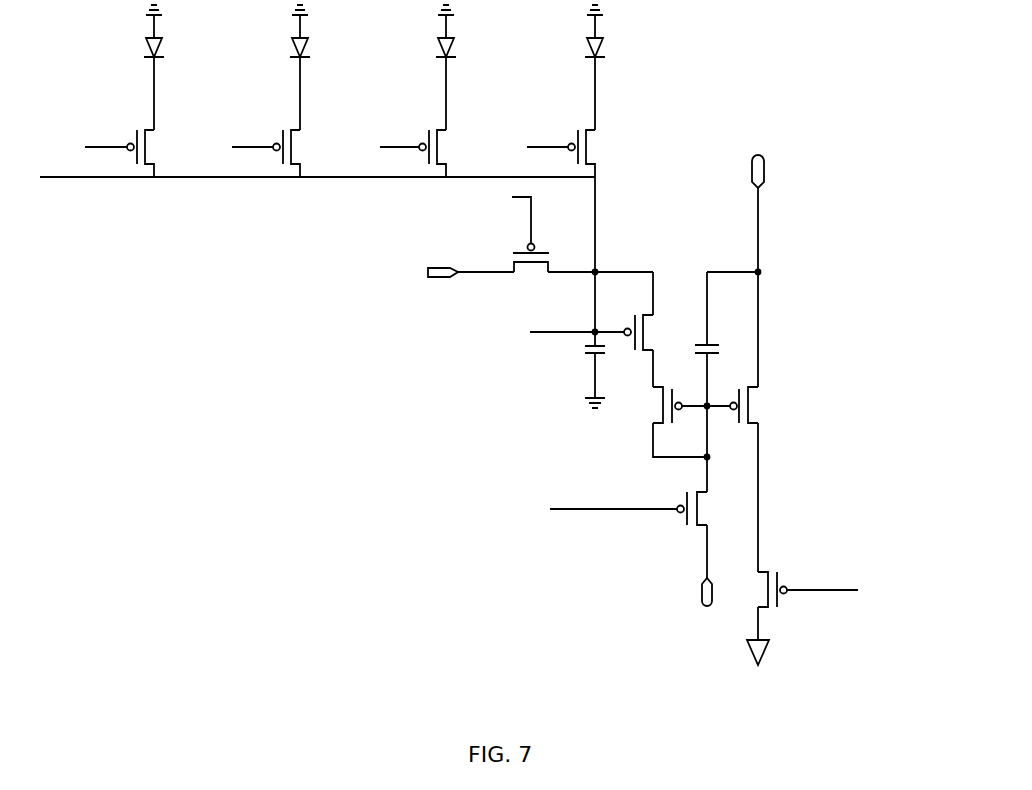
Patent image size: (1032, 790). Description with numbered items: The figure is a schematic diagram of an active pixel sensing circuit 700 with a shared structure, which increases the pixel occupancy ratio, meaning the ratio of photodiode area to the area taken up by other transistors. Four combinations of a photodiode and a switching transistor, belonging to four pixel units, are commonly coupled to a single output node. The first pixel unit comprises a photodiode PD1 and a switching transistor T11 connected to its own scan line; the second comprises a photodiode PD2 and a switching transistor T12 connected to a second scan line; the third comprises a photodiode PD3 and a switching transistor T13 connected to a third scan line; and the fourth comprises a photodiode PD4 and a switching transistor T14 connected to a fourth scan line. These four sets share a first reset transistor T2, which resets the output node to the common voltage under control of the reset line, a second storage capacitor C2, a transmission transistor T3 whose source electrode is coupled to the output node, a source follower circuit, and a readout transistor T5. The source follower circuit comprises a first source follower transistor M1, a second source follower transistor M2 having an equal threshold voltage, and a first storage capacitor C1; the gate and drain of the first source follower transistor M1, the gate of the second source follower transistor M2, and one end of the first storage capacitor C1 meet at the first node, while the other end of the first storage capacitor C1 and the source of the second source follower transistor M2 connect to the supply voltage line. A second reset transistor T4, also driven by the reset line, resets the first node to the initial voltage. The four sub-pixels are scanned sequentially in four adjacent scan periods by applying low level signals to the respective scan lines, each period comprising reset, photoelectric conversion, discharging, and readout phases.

The active pixel sensing circuit 700 is at (480, 354).
The photodiode PD1 is at (571, 67).
The photodiode PD2 is at (422, 67).
The photodiode PD3 is at (276, 67).
The photodiode PD4 is at (133, 67).
The switching transistor T11 is at (569, 148).
The switching transistor T12 is at (421, 148).
The switching transistor T13 is at (276, 148).
The switching transistor T14 is at (130, 148).
The first reset transistor T2 is at (531, 270).
The transmission transistor T3 is at (649, 332).
The second reset transistor T4 is at (686, 503).
The readout transistor T5 is at (776, 583).
The first source follower transistor M1 is at (661, 405).
The second source follower transistor M2 is at (752, 405).
The first storage capacitor C1 is at (715, 351).
The second storage capacitor C2 is at (579, 353).